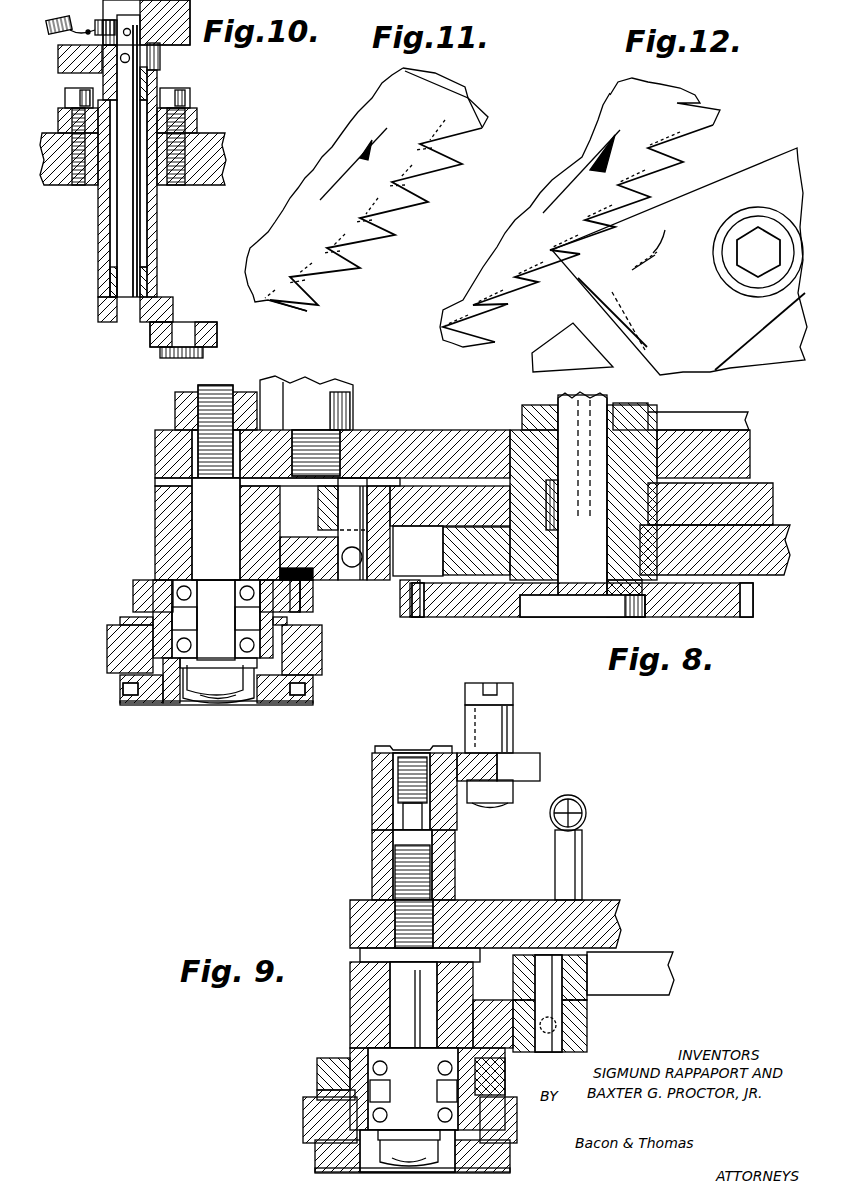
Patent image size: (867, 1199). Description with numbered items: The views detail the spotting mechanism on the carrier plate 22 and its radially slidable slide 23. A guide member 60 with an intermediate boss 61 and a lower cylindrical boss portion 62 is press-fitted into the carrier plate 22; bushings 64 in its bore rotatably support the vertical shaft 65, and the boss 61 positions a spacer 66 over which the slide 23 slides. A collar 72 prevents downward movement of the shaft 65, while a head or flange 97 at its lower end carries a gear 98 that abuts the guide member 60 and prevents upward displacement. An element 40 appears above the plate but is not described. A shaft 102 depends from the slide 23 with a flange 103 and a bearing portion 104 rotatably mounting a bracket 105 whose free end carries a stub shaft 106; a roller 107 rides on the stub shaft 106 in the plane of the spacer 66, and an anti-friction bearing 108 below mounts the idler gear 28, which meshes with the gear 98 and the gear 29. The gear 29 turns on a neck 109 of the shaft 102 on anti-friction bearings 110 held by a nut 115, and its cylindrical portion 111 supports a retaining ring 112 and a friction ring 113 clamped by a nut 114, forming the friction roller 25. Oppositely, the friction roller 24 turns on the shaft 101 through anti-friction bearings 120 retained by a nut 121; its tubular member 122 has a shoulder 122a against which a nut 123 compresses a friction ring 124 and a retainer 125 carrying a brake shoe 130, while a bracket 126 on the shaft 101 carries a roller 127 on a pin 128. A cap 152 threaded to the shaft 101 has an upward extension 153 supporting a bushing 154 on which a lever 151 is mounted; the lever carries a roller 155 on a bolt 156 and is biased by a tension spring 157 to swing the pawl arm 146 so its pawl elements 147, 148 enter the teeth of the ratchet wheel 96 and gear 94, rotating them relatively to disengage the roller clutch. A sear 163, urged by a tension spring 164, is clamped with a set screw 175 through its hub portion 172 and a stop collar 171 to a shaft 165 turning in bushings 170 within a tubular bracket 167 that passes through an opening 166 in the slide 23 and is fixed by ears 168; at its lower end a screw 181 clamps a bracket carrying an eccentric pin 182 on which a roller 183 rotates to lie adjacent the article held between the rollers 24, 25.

In FIG. 8, the carrier plate 22 is at (450, 553).
In FIG. 10, the slidable member 23 is at (215, 140).
In FIG. 8, the slidable member 23 is at (160, 452).
In FIG. 9, the slidable member 23 is at (500, 912).
In FIG. 9, the friction roller 24 is at (268, 1127).
In FIG. 8, the friction roller 25 is at (96, 697).
In FIG. 8, the idler gear 28 is at (403, 616).
In FIG. 8, the gear 29 is at (150, 600).
In FIG. 8, the block 40 is at (340, 420).
In FIG. 8, the guide member 60 is at (525, 440).
In FIG. 8, the intermediate boss 61 is at (612, 531).
In FIG. 8, the lower cylindrical boss portion 62 is at (635, 561).
In FIG. 8, the bushings 64 is at (555, 468).
In FIG. 8, the vertical shaft 65 is at (562, 412).
In FIG. 8, the spacer 66 is at (773, 485).
In FIG. 9, the spacer 66 is at (663, 951).
In FIG. 8, the collar 72 is at (652, 408).
In FIG. 11, the gear 94 is at (355, 278).
In FIG. 12, the gear 94 is at (690, 160).
In FIG. 11, the ratchet wheel 96 is at (325, 173).
In FIG. 12, the ratchet wheel 96 is at (606, 126).
In FIG. 8, the head or flange 97 is at (543, 608).
In FIG. 8, the gear 98 is at (468, 605).
In FIG. 9, the shaft 101 is at (405, 1010).
In FIG. 8, the shaft 102 is at (150, 483).
In FIG. 8, the flange 103 is at (160, 505).
In FIG. 8, the bearing portion 104 is at (205, 525).
In FIG. 8, the bracket 105 is at (180, 555).
In FIG. 8, the stub shaft 106 is at (348, 538).
In FIG. 8, the roller 107 is at (325, 500).
In FIG. 8, the anti-friction bearing 108 is at (360, 621).
In FIG. 8, the neck 109 is at (218, 590).
In FIG. 8, the anti-friction bearings 110 is at (228, 620).
In FIG. 8, the cylindrical portion 111 is at (176, 692).
In FIG. 8, the retaining ring 112 is at (305, 620).
In FIG. 8, the friction ring 113 is at (320, 660).
In FIG. 8, the nut 114 is at (280, 698).
In FIG. 8, the nut 115 is at (233, 700).
In FIG. 9, the anti-friction bearings 120 is at (426, 1071).
In FIG. 9, the nut 121 is at (413, 1164).
In FIG. 9, the central tubular member 122 is at (360, 1061).
In FIG. 9, the shoulder 122a is at (343, 1081).
In FIG. 9, the nut 123 is at (505, 1171).
In FIG. 9, the friction ring 124 is at (310, 1111).
In FIG. 9, the retainer 125 is at (318, 1094).
In FIG. 9, the bracket 126 is at (578, 1023).
In FIG. 9, the roller 127 is at (575, 981).
In FIG. 9, the pin 128 is at (545, 979).
In FIG. 9, the brake shoe 130 is at (506, 1073).
In FIG. 12, the pawl arm 146 is at (770, 180).
In FIG. 12, the pawl element 147 is at (658, 240).
In FIG. 12, the pawl element 148 is at (562, 325).
In FIG. 9, the lever 151 is at (548, 772).
In FIG. 9, the lower housing 152 is at (370, 863).
In FIG. 9, the upward extension 153 is at (395, 812).
In FIG. 9, the bushing 154 is at (370, 795).
In FIG. 9, the roller 155 is at (518, 736).
In FIG. 9, the bolt 156 is at (505, 700).
In FIG. 9, the tension spring 157 is at (585, 806).
In FIG. 10, the sear 163 is at (172, 4).
In FIG. 10, the tension spring 164 is at (55, 18).
In FIG. 10, the shaft 165 is at (124, 228).
In FIG. 10, the opening 166 is at (157, 175).
In FIG. 10, the tubular bracket 167 is at (150, 245).
In FIG. 10, the ears 168 is at (195, 110).
In FIG. 10, the bushings 170 is at (150, 90).
In FIG. 10, the stop collar 171 is at (75, 62).
In FIG. 10, the hub portion 172 is at (160, 56).
In FIG. 10, the set screw 175 is at (98, 20).
In FIG. 10, the screw 181 is at (150, 312).
In FIG. 10, the pin 182 is at (190, 332).
In FIG. 10, the roller 183 is at (205, 350).